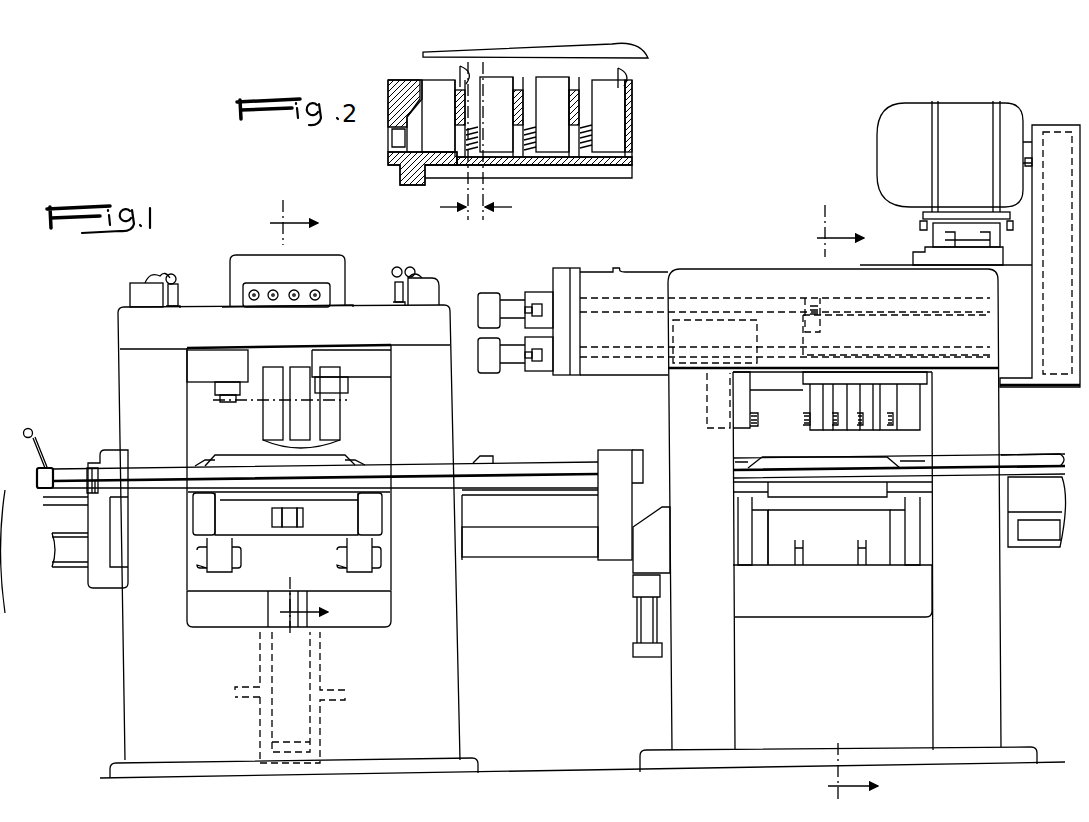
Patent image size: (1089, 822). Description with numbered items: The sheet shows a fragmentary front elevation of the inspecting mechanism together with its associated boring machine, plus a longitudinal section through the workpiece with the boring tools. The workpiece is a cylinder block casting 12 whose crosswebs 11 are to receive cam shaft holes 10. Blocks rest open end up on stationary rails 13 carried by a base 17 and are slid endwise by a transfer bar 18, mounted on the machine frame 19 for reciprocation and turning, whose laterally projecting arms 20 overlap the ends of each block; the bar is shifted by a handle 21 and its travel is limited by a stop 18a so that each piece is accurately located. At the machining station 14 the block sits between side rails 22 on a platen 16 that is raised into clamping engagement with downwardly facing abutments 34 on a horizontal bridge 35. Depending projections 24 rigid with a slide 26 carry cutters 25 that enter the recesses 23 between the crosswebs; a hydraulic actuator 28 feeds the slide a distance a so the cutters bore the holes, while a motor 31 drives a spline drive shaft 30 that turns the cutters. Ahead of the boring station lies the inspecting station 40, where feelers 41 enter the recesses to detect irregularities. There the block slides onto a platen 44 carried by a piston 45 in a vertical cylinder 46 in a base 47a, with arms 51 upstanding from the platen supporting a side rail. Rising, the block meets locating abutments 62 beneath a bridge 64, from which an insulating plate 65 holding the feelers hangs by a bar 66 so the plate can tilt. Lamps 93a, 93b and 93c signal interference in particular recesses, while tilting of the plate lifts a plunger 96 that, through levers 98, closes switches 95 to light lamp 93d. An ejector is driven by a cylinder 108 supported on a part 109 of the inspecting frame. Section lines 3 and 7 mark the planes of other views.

In FIG. 1, the section line 3 is at (307, 412).
In FIG. 1, the section line 7 is at (855, 504).
In FIG. 2, the cam shaft hole 10 is at (572, 120).
In FIG. 2, the crossweb 11 is at (460, 102).
In FIG. 2, the cylinder block casting 12 is at (406, 176).
In FIG. 1, the cylinder block casting 12 is at (345, 462).
In FIG. 1, the stationary rails 13 is at (530, 528).
In FIG. 1, the machining station 14 is at (700, 434).
In FIG. 1, the platen 16 is at (780, 578).
In FIG. 1, the base 17 is at (680, 700).
In FIG. 1, the transfer bar 18 is at (545, 465).
In FIG. 1, the stop 18a is at (92, 462).
In FIG. 1, the machine frame 19 is at (678, 400).
In FIG. 1, the laterally projecting arms 20 is at (210, 458).
In FIG. 1, the handle 21 is at (40, 428).
In FIG. 1, the side rails 22 is at (822, 494).
In FIG. 2, the recesses 23 is at (470, 63).
In FIG. 2, the depending projections 24 is at (620, 135).
In FIG. 1, the depending projections 24 is at (815, 432).
In FIG. 2, the cutters 25 is at (464, 147).
In FIG. 1, the cutters 25 is at (810, 412).
In FIG. 2, the slide 26 is at (637, 52).
In FIG. 1, the slide 26 is at (908, 318).
In FIG. 1, the hydraulic actuator 28 is at (510, 296).
In FIG. 1, the spline drive shaft 30 is at (1018, 336).
In FIG. 1, the motor 31 is at (985, 105).
In FIG. 1, the downwardly facing abutments 34 is at (778, 392).
In FIG. 1, the horizontal bridge 35 is at (742, 276).
In FIG. 1, the inspecting station 40 is at (192, 432).
In FIG. 1, the feelers 41 is at (265, 448).
In FIG. 1, the platen 44 is at (212, 588).
In FIG. 1, the piston 45 is at (275, 610).
In FIG. 1, the vertical cylinder 46 is at (270, 728).
In FIG. 1, the base 47a is at (128, 710).
In FIG. 1, the arms 51 is at (225, 572).
In FIG. 1, the locating abutments 62 is at (227, 403).
In FIG. 1, the bridge 64 is at (128, 328).
In FIG. 1, the plate 65 is at (300, 370).
In FIG. 1, the bar 66 is at (258, 356).
In FIG. 1, the lamp 93a is at (255, 289).
In FIG. 1, the lamp 93b is at (273, 301).
In FIG. 1, the lamp 93c is at (294, 289).
In FIG. 1, the signal lamp 93d is at (315, 301).
In FIG. 1, the switches 95 is at (130, 297).
In FIG. 1, the plunger 96 is at (180, 297).
In FIG. 1, the levers 98 is at (172, 274).
In FIG. 1, the cylinder 108 is at (290, 527).
In FIG. 1, the part 109 is at (258, 527).
In FIG. 2, the distance a is at (476, 141).